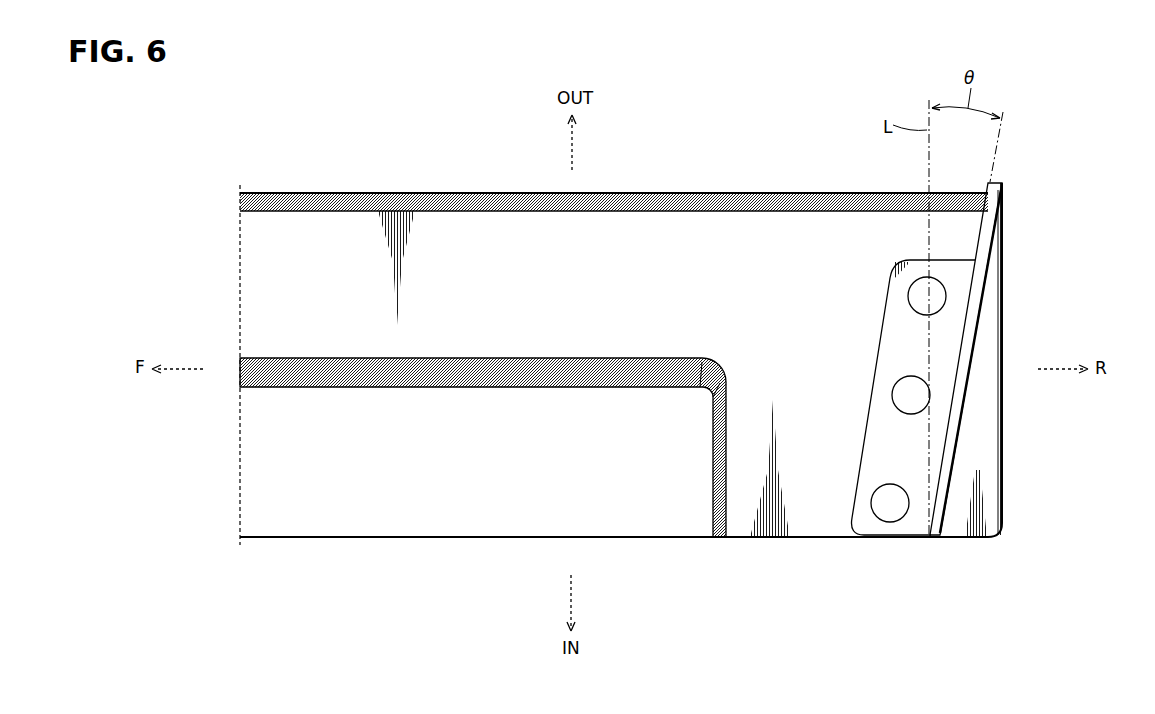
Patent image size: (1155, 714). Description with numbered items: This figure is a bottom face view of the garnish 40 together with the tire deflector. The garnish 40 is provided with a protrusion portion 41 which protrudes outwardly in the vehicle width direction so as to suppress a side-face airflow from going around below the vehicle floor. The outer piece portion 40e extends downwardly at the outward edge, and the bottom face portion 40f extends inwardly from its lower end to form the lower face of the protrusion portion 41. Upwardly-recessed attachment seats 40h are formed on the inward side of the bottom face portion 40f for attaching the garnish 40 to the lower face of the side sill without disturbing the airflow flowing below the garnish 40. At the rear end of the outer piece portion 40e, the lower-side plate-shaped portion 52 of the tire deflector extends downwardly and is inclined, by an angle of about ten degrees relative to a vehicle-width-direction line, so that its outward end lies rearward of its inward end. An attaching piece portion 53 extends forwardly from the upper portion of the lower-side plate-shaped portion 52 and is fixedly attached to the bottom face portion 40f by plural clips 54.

The garnish 40 is at (378, 180).
The outer piece portion 40e is at (484, 193).
The protrusion portion 41 is at (676, 195).
The bottom face portion 40f is at (543, 294).
The attachment seats 40h is at (392, 485).
The lower-side plate-shaped portion 52 is at (947, 430).
The attaching piece portion 53 is at (893, 328).
The clips 54 is at (918, 297).